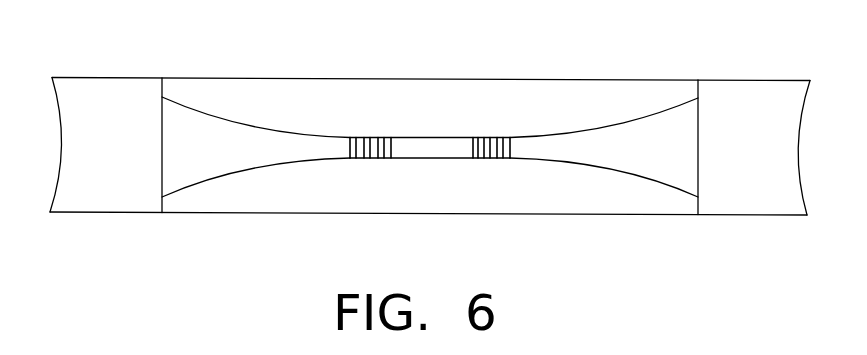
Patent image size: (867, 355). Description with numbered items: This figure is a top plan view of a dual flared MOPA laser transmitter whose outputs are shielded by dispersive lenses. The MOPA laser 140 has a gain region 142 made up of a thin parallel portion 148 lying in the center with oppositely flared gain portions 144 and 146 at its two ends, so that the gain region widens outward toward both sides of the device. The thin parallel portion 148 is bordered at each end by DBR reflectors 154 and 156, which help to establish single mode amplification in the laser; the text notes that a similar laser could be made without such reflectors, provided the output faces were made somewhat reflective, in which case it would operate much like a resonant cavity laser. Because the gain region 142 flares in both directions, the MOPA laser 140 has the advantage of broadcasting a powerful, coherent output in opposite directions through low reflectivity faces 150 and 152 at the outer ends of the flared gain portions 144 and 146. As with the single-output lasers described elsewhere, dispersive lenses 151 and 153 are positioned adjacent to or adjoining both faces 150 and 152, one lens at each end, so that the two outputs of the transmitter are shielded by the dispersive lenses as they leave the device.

The MOPA laser 140 is at (593, 80).
The gain region 142 is at (430, 137).
The flared gain portion 144 is at (210, 178).
The flared gain portion 146 is at (625, 172).
The thin parallel portion 148 is at (427, 143).
The low reflectivity face 150 is at (161, 185).
The low reflectivity face 152 is at (698, 188).
The dispersive lens 151 is at (115, 78).
The dispersive lens 153 is at (752, 80).
The DBR reflector 154 is at (365, 138).
The DBR reflector 156 is at (478, 138).